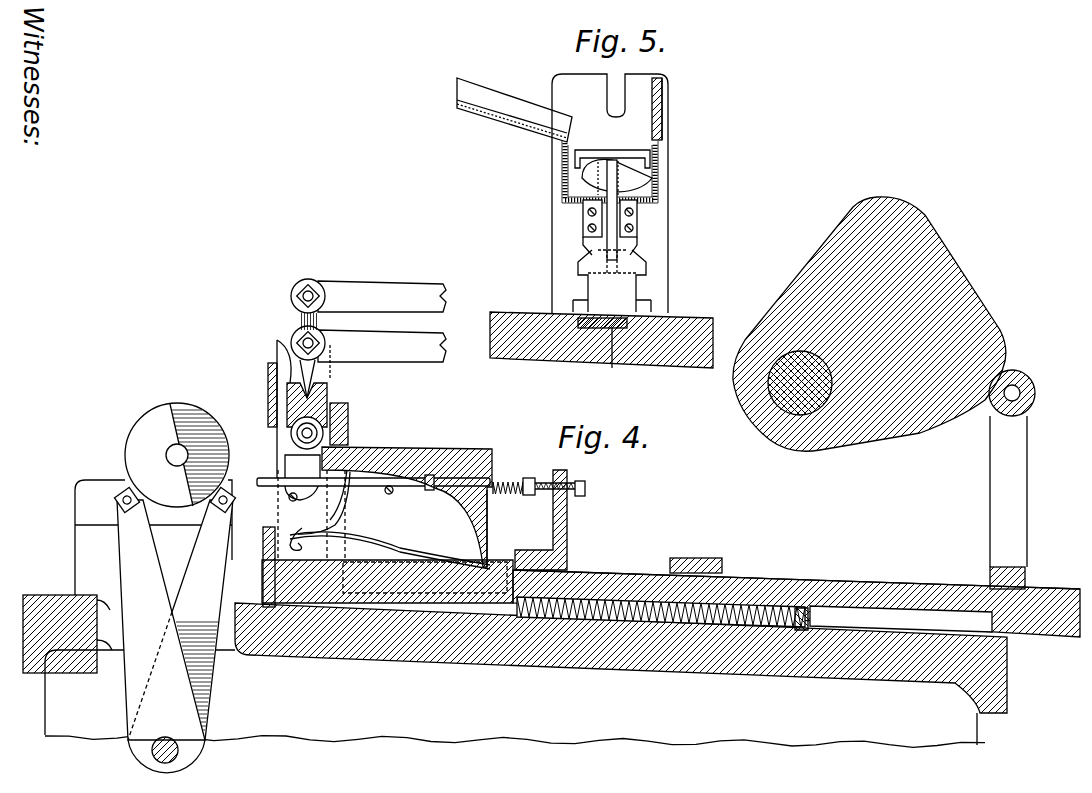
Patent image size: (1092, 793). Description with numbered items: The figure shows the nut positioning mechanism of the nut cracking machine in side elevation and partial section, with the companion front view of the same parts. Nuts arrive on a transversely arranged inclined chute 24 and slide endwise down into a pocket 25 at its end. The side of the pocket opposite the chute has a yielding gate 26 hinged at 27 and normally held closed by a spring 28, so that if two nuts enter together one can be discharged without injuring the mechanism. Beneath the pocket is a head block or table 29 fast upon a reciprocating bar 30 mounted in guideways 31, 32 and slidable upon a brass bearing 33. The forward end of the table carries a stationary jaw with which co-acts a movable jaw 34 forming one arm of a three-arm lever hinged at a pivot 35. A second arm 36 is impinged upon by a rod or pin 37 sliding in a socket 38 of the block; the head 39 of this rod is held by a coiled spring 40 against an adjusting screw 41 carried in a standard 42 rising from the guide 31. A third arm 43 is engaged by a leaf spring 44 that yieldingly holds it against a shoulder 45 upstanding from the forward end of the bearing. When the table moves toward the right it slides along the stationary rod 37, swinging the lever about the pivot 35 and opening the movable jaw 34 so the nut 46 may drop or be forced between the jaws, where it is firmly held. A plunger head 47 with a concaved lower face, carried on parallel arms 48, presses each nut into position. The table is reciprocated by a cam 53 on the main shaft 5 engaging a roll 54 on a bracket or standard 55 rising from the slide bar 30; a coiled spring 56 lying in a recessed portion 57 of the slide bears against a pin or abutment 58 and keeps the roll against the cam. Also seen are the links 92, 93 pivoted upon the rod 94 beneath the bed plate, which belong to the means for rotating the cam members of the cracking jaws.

In FIG. 4, the main shaft 5 is at (767, 348).
In FIG. 5, the inclined chute 24 is at (458, 90).
In FIG. 5, the pocket 25 is at (562, 172).
In FIG. 5, the gate 26 is at (657, 162).
In FIG. 5, the hinge 27 is at (663, 133).
In FIG. 5, the spring 28 is at (665, 116).
In FIG. 4, the head block or table 29 is at (408, 462).
In FIG. 5, the reciprocating bar 30 is at (612, 300).
In FIG. 4, the reciprocating bar 30 is at (275, 578).
In FIG. 4, the guideway 31 is at (568, 572).
In FIG. 4, the guideway 32 is at (700, 559).
In FIG. 5, the bearing 33 is at (612, 368).
In FIG. 4, the bearing 33 is at (292, 445).
In FIG. 4, the movable jaw 34 is at (285, 459).
In FIG. 4, the pivot 35 is at (289, 497).
In FIG. 4, the lever arm 36 is at (345, 495).
In FIG. 4, the rod or pin 37 is at (427, 488).
In FIG. 4, the socket 38 is at (486, 494).
In FIG. 4, the head 39 is at (531, 478).
In FIG. 4, the coiled spring 40 is at (506, 481).
In FIG. 4, the adjusting screw 41 is at (586, 488).
In FIG. 4, the standard 42 is at (568, 522).
In FIG. 4, the third arm 43 is at (292, 532).
In FIG. 4, the leaf spring 44 is at (418, 548).
In FIG. 4, the shoulder 45 is at (264, 536).
In FIG. 4, the nut 46 is at (300, 428).
In FIG. 4, the plunger head 47 is at (322, 402).
In FIG. 4, the parallel arms 48 is at (438, 300).
In FIG. 4, the cam 53 is at (912, 230).
In FIG. 4, the roll 54 is at (1037, 390).
In FIG. 4, the bracket or standard 55 is at (1028, 490).
In FIG. 4, the coiled spring 56 is at (752, 600).
In FIG. 4, the recessed portion 57 is at (926, 617).
In FIG. 4, the pin or abutment 58 is at (805, 605).
In FIG. 4, the link 92 is at (208, 684).
In FIG. 4, the link 93 is at (122, 687).
In FIG. 4, the rod 94 is at (178, 754).